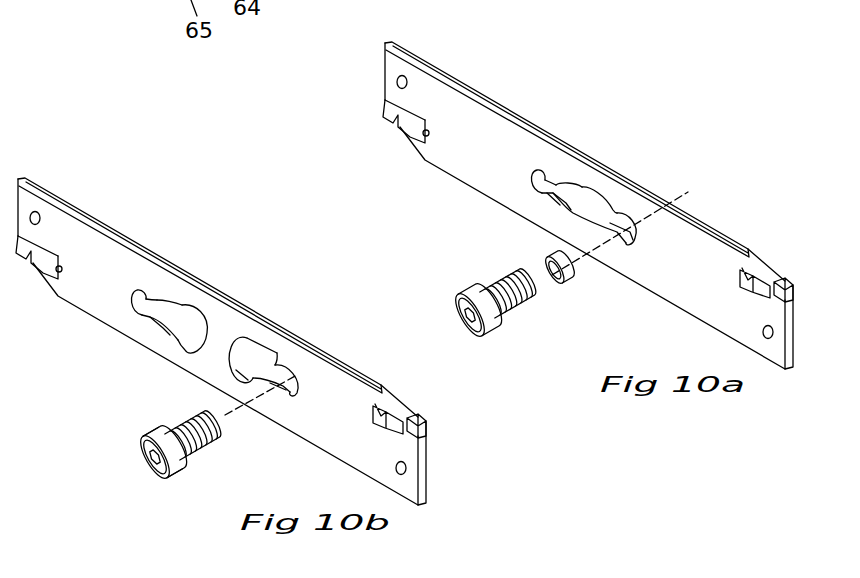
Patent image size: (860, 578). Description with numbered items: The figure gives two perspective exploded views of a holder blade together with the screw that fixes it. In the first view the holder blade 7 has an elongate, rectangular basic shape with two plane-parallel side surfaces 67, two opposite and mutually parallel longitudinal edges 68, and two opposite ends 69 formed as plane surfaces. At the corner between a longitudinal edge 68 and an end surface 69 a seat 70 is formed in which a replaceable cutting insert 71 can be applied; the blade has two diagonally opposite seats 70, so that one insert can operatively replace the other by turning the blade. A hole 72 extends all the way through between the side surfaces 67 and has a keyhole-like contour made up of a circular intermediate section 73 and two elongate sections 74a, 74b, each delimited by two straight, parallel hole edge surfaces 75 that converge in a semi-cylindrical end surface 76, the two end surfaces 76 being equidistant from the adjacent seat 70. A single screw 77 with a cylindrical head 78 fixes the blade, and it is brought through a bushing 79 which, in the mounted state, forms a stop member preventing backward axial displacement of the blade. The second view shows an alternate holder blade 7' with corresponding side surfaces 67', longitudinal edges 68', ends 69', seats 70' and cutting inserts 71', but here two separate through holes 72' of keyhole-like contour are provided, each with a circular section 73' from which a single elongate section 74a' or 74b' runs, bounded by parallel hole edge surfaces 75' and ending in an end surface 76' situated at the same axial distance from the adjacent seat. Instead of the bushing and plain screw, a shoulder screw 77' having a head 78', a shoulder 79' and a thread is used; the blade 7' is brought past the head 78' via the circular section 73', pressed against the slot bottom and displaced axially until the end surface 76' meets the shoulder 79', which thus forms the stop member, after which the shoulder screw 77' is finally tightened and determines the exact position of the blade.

In FIG. 10A, the holder blade 7 is at (607, 199).
In FIG. 10A, the side surfaces 67 is at (585, 205).
In FIG. 10A, the longitudinal edges 68 is at (567, 151).
In FIG. 10A, the ends 69 is at (607, 191).
In FIG. 10A, the seat 70 is at (576, 201).
In FIG. 10A, the cutting insert 71 is at (802, 270).
In FIG. 10A, the hole 72 is at (548, 216).
In FIG. 10A, the circular intermediate section 73 is at (595, 147).
In FIG. 10A, the elongate section 74a is at (570, 146).
In FIG. 10A, the elongate section 74b is at (629, 179).
In FIG. 10A, the hole edge surfaces 75 is at (564, 227).
In FIG. 10A, the end surface 76 is at (571, 226).
In FIG. 10A, the screw 77 is at (469, 304).
In FIG. 10A, the head 78 is at (446, 305).
In FIG. 10A, the bushing 79 is at (568, 290).
In FIG. 10B, the holder blade 7' is at (245, 329).
In FIG. 10B, the side surfaces 67' is at (218, 341).
In FIG. 10B, the longitudinal edges 68' is at (199, 287).
In FIG. 10B, the ends 69' is at (245, 326).
In FIG. 10B, the seat 70' is at (209, 345).
In FIG. 10B, the cutting insert 71' is at (439, 407).
In FIG. 10B, the through holes 72' is at (218, 360).
In FIG. 10B, the circular section 73' is at (230, 290).
In FIG. 10B, the elongate section 74a' is at (175, 263).
In FIG. 10B, the elongate section 74b' is at (309, 332).
In FIG. 10B, the hole edge surfaces 75' is at (197, 391).
In FIG. 10B, the end surface 76' is at (210, 362).
In FIG. 10B, the shoulder screw 77' is at (179, 435).
In FIG. 10B, the head 78' is at (132, 445).
In FIG. 10B, the shoulder 79' is at (185, 468).